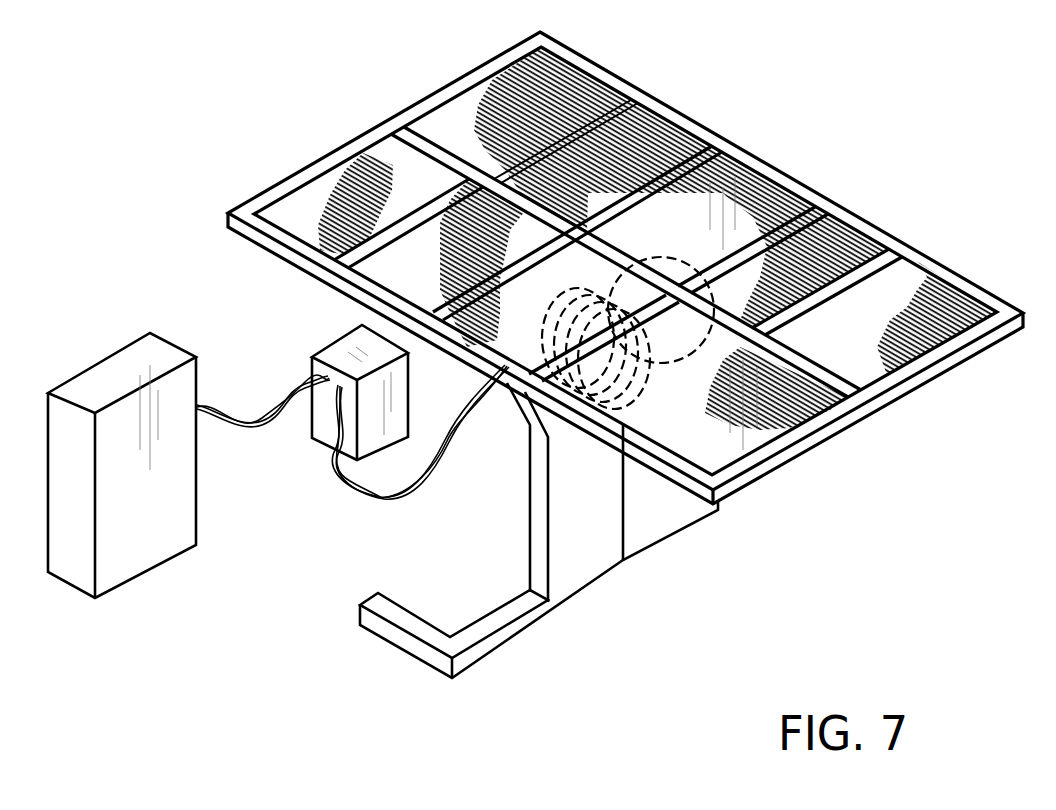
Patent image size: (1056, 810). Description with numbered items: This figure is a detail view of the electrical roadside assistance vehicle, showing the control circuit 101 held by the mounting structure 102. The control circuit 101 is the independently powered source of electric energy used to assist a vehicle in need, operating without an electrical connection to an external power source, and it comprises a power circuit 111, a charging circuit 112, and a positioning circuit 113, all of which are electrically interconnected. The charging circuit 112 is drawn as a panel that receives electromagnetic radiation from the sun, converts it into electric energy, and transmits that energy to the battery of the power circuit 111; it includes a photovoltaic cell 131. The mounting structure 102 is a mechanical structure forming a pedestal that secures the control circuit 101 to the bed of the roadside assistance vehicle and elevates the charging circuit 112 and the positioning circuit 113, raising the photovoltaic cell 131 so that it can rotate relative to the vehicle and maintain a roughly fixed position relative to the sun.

The control circuit 101 is at (212, 162).
The mounting structure 102 is at (573, 582).
The power circuit 111 is at (314, 356).
The charging circuit 112 is at (831, 195).
The positioning circuit 113 is at (192, 497).
The photovoltaic cell 131 is at (905, 322).